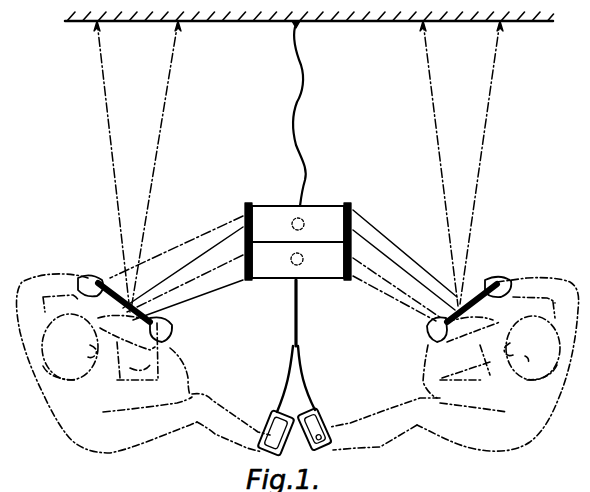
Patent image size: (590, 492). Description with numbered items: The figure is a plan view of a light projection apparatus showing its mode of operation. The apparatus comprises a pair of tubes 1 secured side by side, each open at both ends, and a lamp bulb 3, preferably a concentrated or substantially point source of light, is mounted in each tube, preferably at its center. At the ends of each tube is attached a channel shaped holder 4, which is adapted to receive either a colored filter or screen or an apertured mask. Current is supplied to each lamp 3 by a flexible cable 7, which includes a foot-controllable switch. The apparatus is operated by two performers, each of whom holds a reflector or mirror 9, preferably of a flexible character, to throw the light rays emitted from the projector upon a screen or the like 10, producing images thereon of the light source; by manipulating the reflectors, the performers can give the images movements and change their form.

The tube 1 is at (319, 215).
The lamp bulb 3 is at (292, 256).
The channel shaped holder 4 is at (245, 209).
The flexible cable 7 is at (297, 370).
The reflector or mirror 9 is at (117, 310).
The screen 10 is at (222, 22).